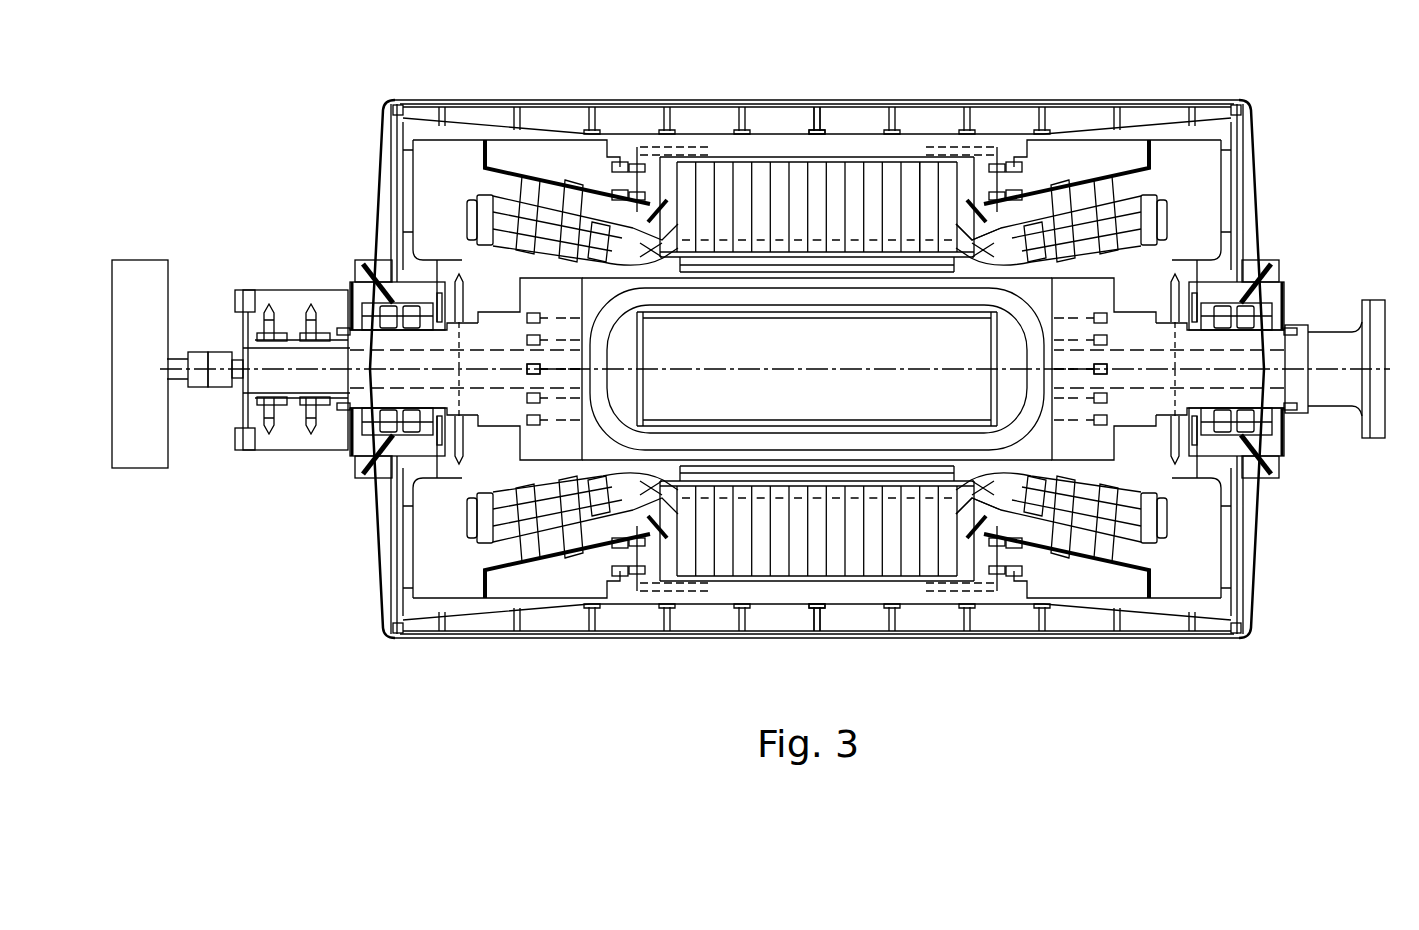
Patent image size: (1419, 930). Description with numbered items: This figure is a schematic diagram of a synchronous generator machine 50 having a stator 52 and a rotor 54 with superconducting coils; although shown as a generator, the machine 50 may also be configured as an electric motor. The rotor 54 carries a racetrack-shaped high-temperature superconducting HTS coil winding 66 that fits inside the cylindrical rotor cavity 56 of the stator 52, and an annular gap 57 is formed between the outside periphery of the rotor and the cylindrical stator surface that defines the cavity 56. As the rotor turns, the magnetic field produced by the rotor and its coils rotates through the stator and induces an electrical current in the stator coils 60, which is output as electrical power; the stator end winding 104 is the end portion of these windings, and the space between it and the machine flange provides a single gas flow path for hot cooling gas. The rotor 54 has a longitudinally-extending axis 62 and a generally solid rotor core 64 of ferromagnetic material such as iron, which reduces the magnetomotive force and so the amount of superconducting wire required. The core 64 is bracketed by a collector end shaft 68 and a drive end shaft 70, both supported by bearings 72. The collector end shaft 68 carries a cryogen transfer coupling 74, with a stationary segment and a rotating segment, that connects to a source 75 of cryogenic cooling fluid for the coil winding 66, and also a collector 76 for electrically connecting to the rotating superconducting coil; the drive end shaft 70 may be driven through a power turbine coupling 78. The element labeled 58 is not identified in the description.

The synchronous generator machine 50 is at (1059, 672).
The stator 52 is at (722, 178).
The rotor 54 is at (500, 430).
The cylindrical rotor cavity 56 is at (605, 205).
The annular gap 57 is at (504, 268).
The stator ventilation duct 58 is at (917, 232).
The stator coils 60 is at (947, 243).
The longitudinally-extending axis 62 is at (1330, 358).
The rotor core 64 is at (780, 394).
The HTS coil winding 66 is at (608, 327).
The collector end shaft 68 is at (420, 352).
The drive end shaft 70 is at (1262, 352).
The bearings 72 is at (410, 470).
The cryogen transfer coupling 74 is at (232, 356).
The source of cryogenic cooling fluid 75 is at (143, 259).
The collector 76 is at (299, 438).
The power turbine coupling 78 is at (1380, 432).
The stator end winding 104 is at (1135, 195).